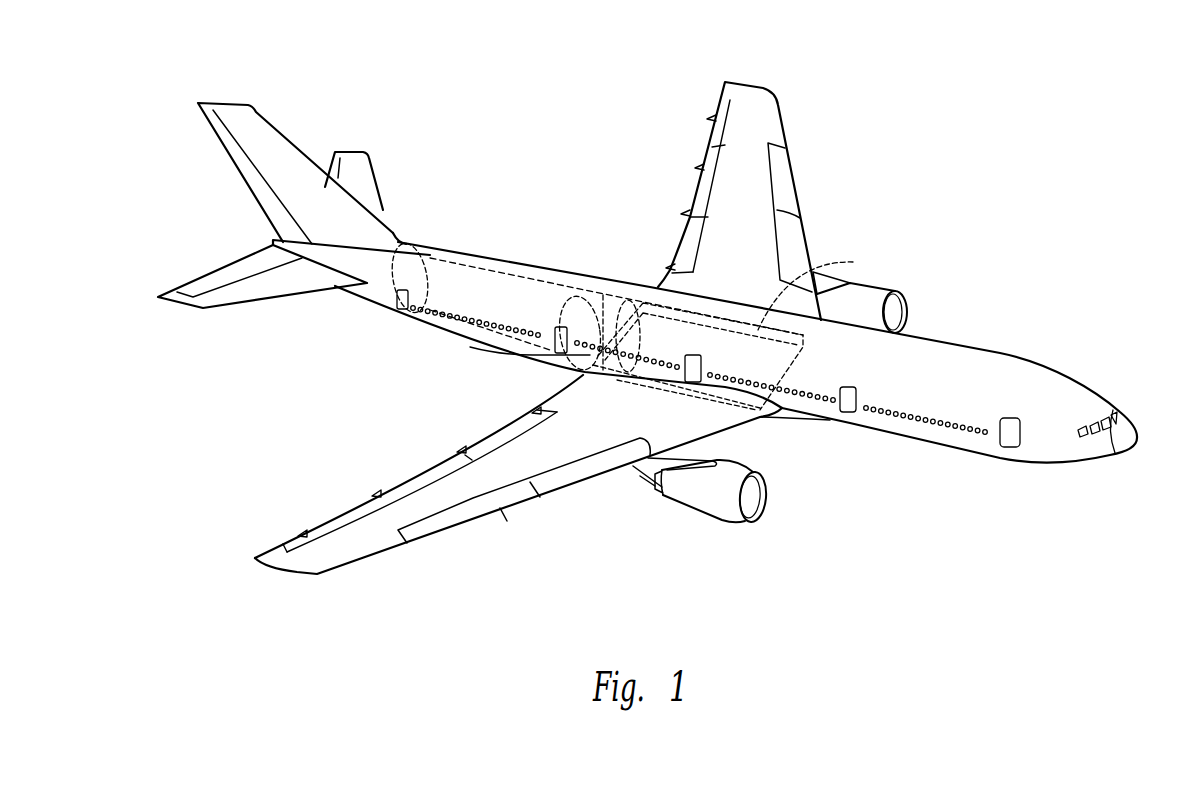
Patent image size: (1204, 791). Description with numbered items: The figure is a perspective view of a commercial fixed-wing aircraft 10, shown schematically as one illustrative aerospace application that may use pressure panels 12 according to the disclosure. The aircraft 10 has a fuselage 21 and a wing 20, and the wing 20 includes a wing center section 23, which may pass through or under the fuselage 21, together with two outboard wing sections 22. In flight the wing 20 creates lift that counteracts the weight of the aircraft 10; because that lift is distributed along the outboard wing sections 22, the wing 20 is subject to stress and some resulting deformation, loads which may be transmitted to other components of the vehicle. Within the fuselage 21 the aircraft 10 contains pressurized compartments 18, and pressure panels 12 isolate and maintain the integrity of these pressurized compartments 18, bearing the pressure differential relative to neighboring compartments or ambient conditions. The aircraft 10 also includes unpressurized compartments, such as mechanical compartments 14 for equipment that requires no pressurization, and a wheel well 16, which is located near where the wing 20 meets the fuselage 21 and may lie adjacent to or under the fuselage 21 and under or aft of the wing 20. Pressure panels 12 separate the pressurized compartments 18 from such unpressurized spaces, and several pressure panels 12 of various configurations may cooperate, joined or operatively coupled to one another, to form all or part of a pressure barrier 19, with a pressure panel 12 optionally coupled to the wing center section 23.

The aircraft 10 is at (449, 88).
The pressure panel 12 is at (538, 173).
The mechanical compartment 14 is at (378, 299).
The wheel well 16 is at (583, 318).
The pressurized compartment 18 is at (977, 368).
The pressure barrier 19 is at (625, 305).
The wing 20 is at (567, 488).
The fuselage 21 is at (931, 340).
The outboard wing section 22 is at (780, 109).
The wing center section 23 is at (821, 290).